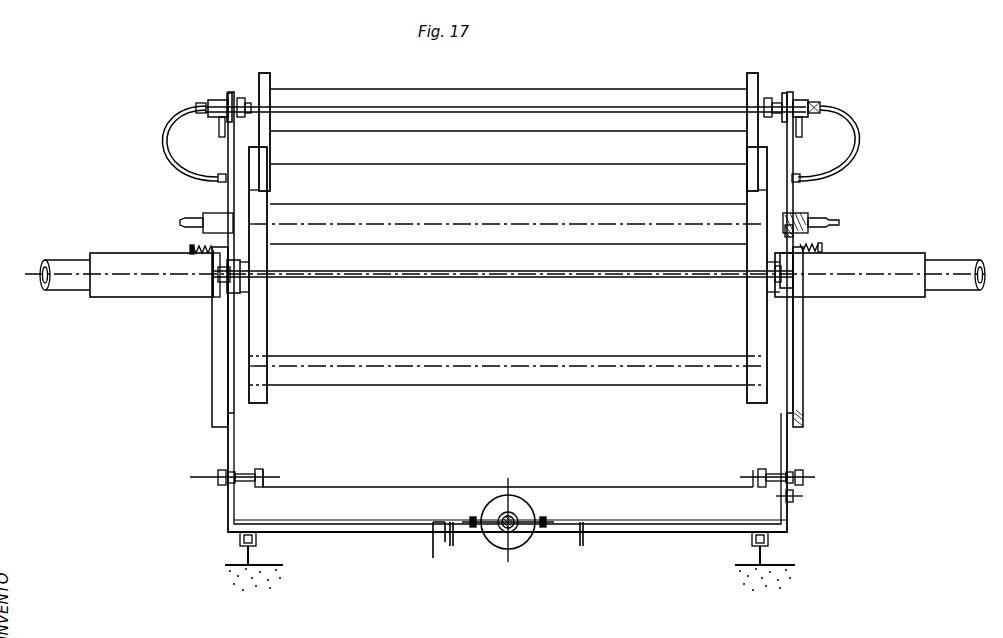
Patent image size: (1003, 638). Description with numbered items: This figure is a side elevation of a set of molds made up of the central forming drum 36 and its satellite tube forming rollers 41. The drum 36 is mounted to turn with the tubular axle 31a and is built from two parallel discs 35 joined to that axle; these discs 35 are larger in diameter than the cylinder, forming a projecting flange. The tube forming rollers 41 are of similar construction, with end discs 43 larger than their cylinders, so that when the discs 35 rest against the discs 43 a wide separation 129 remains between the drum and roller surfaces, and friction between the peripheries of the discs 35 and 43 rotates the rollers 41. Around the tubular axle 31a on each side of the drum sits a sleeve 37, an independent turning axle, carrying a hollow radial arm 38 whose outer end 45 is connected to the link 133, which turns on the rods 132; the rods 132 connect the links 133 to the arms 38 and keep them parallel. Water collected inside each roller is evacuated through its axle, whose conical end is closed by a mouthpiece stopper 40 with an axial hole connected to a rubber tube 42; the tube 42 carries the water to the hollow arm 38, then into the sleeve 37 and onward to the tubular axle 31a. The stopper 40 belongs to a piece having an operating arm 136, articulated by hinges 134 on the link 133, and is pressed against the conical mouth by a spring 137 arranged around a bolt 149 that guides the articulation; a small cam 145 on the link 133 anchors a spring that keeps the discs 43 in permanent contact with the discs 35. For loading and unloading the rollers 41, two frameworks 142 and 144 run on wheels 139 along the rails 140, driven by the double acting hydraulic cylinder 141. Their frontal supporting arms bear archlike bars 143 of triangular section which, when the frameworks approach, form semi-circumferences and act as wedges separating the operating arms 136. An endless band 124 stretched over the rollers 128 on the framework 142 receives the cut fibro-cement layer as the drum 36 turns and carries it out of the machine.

The tubular axle 31a is at (55, 282).
The parallel discs 35 is at (258, 165).
The forming drum 36 is at (285, 343).
The sleeve 37 is at (105, 286).
The radial arm 38 is at (228, 184).
The mouthpiece stopper 40 is at (210, 103).
The tube forming roller 41 is at (403, 100).
The rubber tube 42 is at (187, 160).
The end disc 43 is at (266, 78).
The outer end 45 is at (229, 97).
The endless band 124 is at (280, 452).
The rollers 128 is at (252, 483).
The wide separation 129 is at (470, 147).
The rods 132 is at (578, 110).
The link 133 is at (246, 98).
The hinges 134 is at (214, 266).
The operating arm 136 is at (182, 115).
The spring 137 is at (196, 249).
The wheels 139 is at (243, 548).
The rails 140 is at (243, 568).
The double acting hydraulic cylinder 141 is at (502, 540).
The framework 142 is at (666, 528).
The archlike bar 143 is at (220, 389).
The framework 144 is at (358, 528).
The small cam 145 is at (815, 108).
The bolt 149 is at (818, 253).